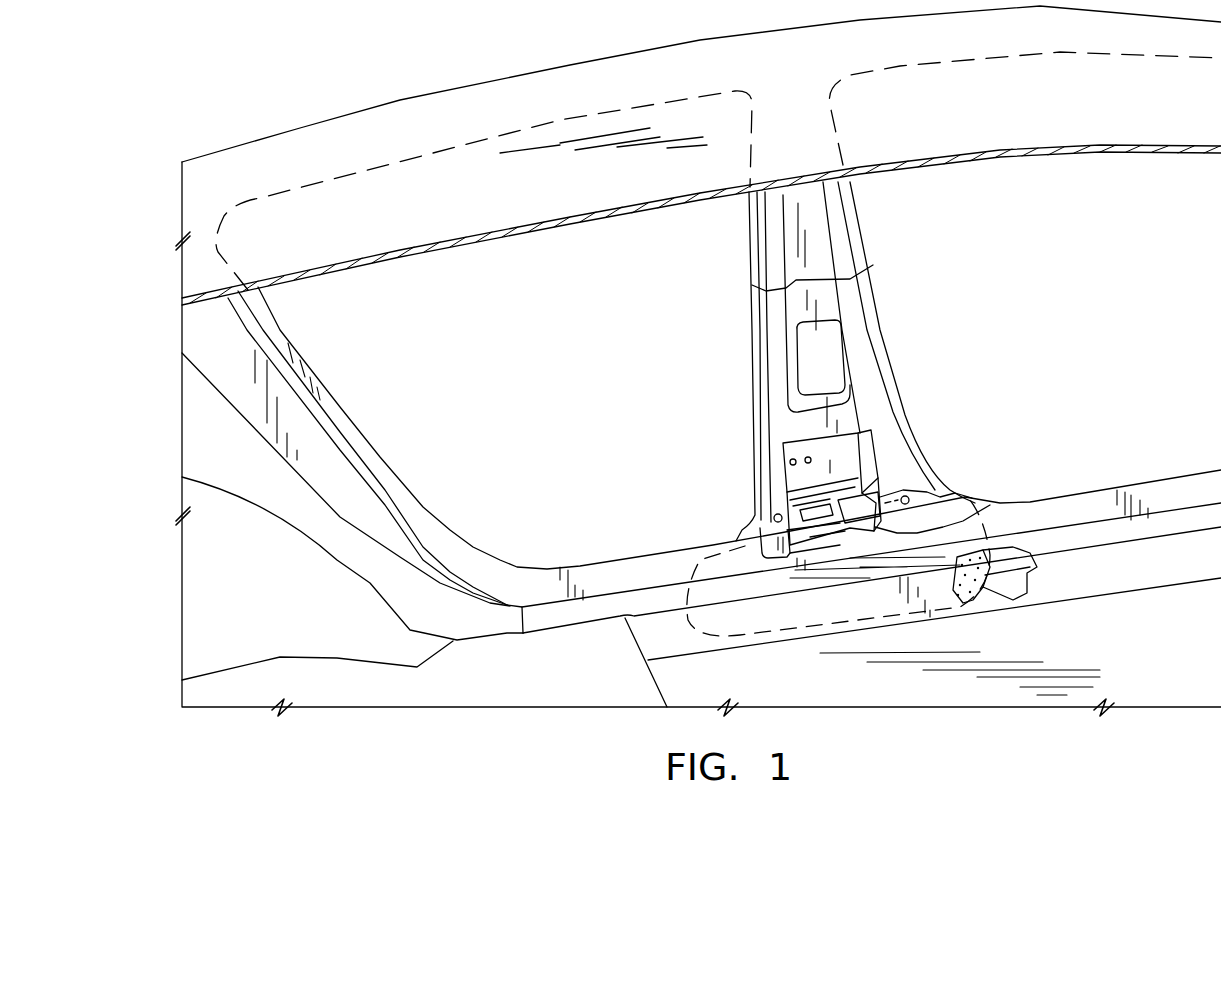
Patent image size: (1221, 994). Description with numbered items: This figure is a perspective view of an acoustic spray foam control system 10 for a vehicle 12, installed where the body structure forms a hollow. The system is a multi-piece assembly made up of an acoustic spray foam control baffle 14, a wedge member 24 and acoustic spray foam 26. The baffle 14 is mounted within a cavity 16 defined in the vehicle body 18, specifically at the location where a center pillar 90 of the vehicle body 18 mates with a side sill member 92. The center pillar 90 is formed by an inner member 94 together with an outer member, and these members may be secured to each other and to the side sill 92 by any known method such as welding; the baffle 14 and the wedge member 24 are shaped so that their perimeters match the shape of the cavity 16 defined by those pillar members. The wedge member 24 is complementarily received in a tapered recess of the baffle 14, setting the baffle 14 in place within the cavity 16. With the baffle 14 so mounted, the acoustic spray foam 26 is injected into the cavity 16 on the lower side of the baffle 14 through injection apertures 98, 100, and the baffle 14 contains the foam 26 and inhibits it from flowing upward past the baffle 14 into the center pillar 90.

The acoustic spray foam control system 10 is at (866, 470).
The vehicle 12 is at (470, 100).
The acoustic spray foam control baffle 14 is at (860, 526).
The cavity 16 is at (798, 492).
The vehicle body 18 is at (877, 387).
The wedge member 24 is at (822, 532).
The acoustic spray foam 26 is at (693, 563).
The center pillar 90 is at (887, 309).
The side sill member 92 is at (1104, 485).
The inner member 94 is at (877, 368).
The injection aperture 98 is at (773, 516).
The injection aperture 100 is at (912, 497).